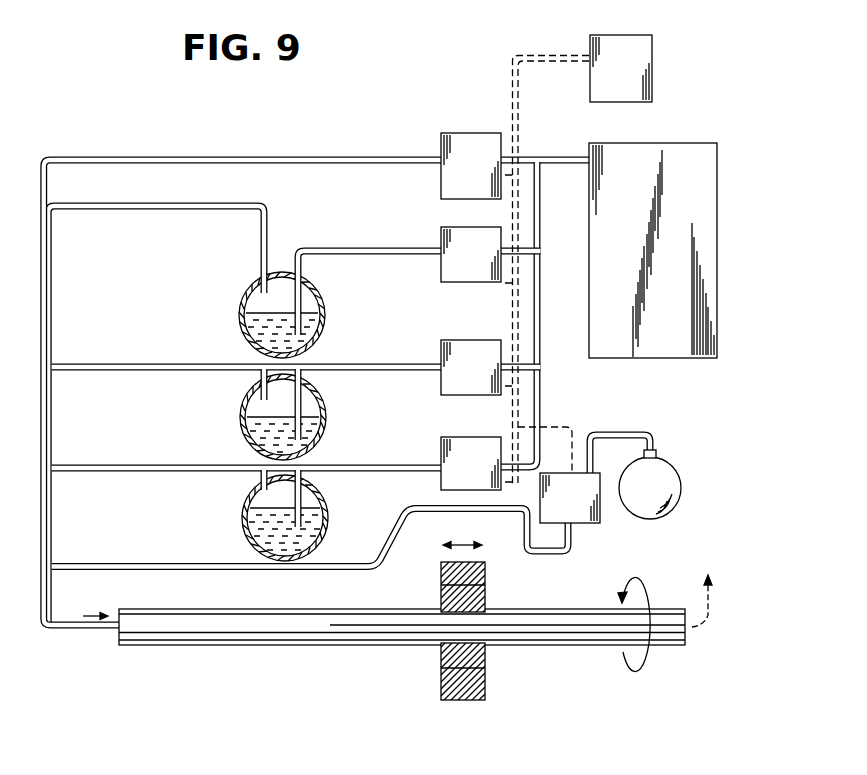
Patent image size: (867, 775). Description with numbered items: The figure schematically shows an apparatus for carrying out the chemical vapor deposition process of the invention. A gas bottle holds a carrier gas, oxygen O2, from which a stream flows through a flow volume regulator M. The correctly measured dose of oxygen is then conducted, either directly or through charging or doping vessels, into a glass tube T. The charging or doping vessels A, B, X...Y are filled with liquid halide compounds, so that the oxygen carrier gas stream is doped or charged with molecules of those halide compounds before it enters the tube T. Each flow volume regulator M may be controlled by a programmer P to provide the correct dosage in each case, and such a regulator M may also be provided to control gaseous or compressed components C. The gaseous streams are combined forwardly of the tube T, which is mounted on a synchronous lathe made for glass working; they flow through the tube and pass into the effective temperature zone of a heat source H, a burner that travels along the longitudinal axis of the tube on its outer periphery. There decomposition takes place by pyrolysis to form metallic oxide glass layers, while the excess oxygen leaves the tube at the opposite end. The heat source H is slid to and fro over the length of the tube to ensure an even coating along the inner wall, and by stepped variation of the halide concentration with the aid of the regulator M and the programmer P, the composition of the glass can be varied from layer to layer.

The charging or doping vessel A is at (241, 323).
The charging or doping vessel B is at (243, 430).
The charging or doping vessels X...Y is at (247, 528).
The flow volume regulator M is at (471, 142).
The programmer P is at (597, 82).
The carrier gas O2 is at (662, 342).
The compressed components C is at (668, 508).
The glass tube T is at (214, 622).
The heat source H is at (470, 690).